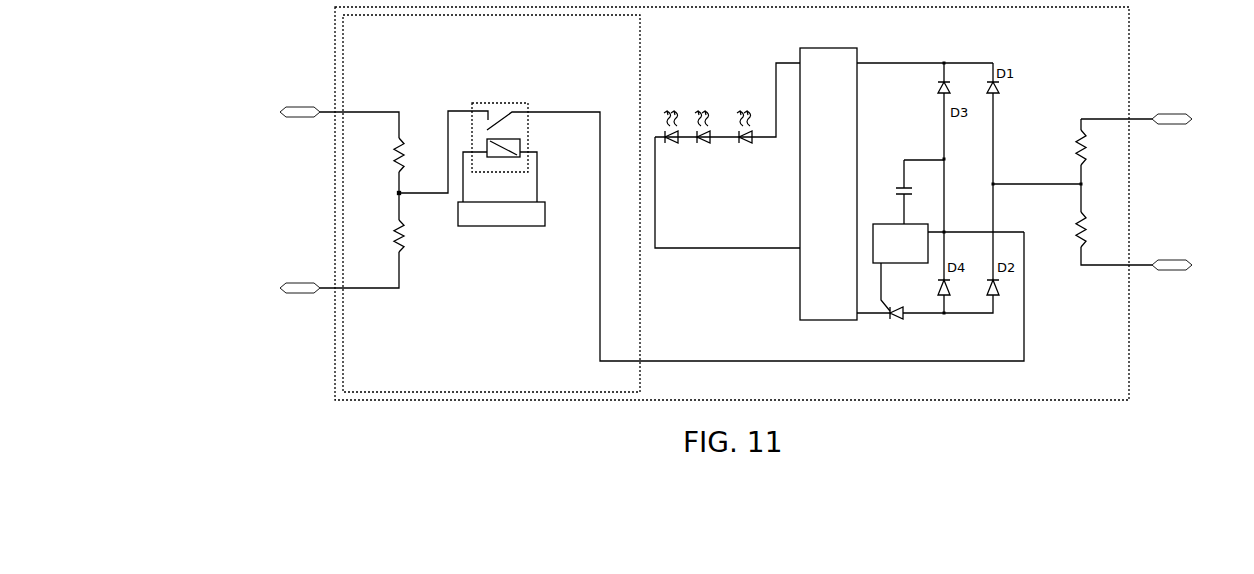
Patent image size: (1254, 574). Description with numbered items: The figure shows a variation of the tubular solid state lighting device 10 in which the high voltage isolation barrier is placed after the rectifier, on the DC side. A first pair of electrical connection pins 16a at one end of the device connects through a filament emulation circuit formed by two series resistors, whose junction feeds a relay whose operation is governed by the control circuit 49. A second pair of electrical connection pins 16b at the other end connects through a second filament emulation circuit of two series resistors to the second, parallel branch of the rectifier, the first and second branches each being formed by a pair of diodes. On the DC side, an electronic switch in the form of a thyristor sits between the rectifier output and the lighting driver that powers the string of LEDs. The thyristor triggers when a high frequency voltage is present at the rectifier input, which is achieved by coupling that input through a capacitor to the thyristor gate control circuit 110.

The tubular solid state lighting device 10 is at (1129, 306).
The first pair of electrical connection pins 16a is at (309, 314).
The second pair of electrical connection pins 16b is at (1149, 77).
The control circuit 49 is at (500, 226).
The thyristor gate control circuit 110 is at (882, 224).